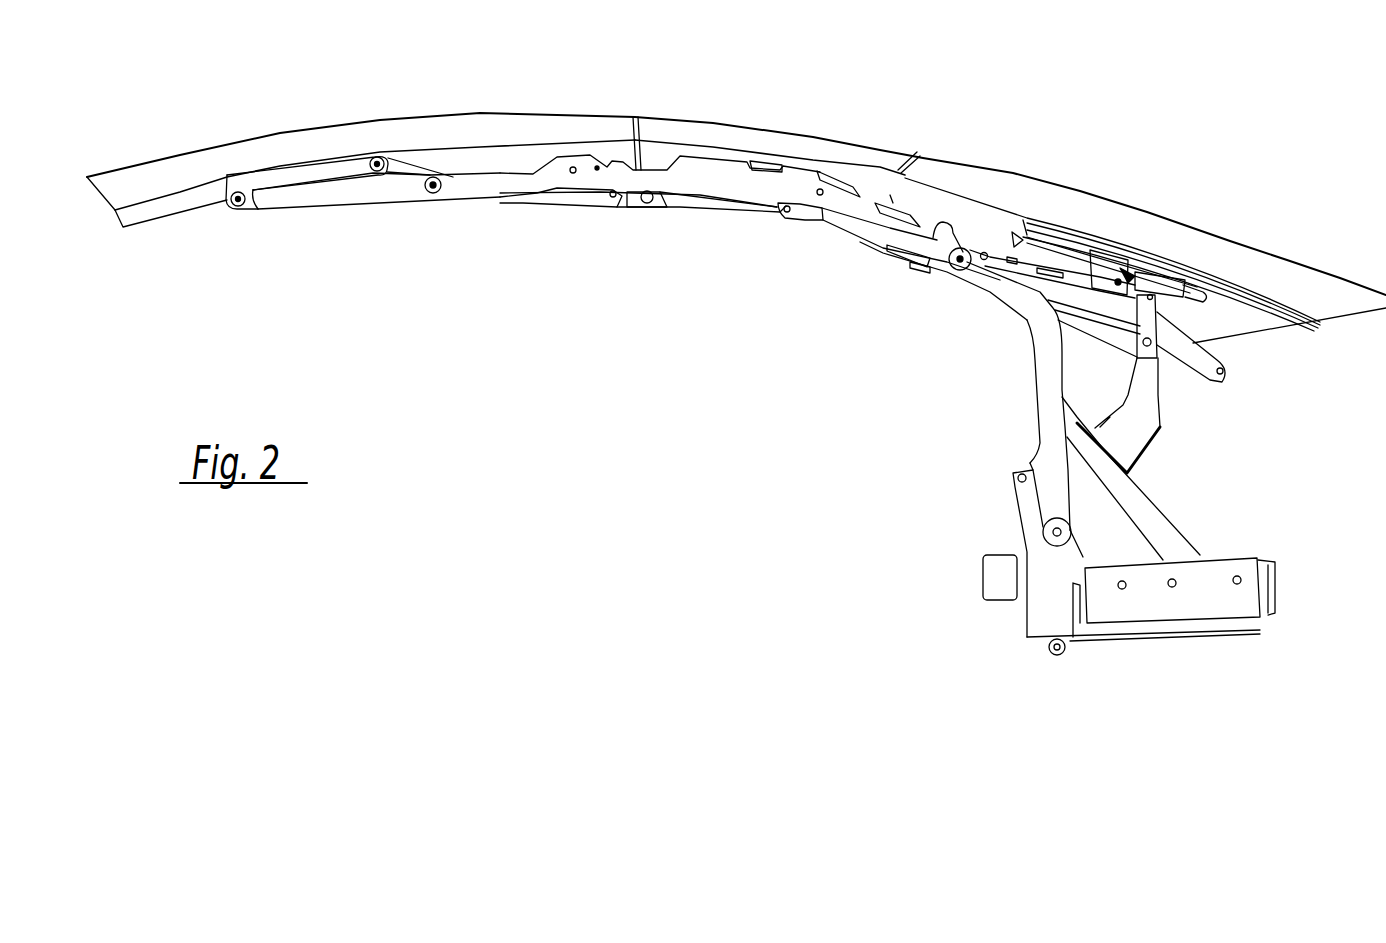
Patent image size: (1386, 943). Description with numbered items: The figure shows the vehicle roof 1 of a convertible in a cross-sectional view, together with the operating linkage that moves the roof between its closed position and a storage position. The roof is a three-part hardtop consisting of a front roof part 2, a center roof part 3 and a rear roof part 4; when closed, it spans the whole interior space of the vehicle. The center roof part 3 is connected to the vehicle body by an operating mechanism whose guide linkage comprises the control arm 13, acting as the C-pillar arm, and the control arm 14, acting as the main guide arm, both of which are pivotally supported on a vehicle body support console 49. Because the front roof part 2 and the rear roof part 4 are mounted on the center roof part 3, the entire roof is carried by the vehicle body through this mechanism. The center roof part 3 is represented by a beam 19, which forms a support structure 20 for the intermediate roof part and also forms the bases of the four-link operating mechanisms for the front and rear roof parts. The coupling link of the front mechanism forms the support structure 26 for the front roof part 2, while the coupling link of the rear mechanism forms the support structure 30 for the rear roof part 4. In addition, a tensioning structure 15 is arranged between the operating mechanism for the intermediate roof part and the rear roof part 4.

The vehicle roof 1 is at (842, 125).
The front roof part 2 is at (338, 141).
The center roof part 3 is at (718, 132).
The rear roof part 4 is at (1072, 200).
The control arm 13 is at (1147, 514).
The control arm 14 is at (1040, 474).
The tensioning structure 15 is at (1196, 319).
The beam 19 is at (690, 184).
The support structure 20 is at (766, 160).
The support structure 26 is at (276, 165).
The support structure 30 is at (1128, 282).
The vehicle body support console 49 is at (983, 618).